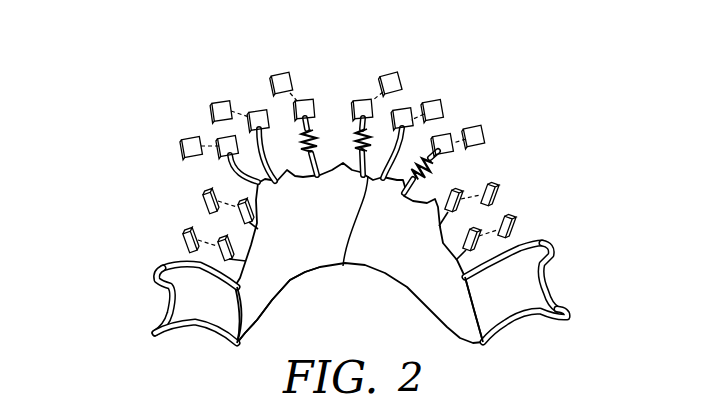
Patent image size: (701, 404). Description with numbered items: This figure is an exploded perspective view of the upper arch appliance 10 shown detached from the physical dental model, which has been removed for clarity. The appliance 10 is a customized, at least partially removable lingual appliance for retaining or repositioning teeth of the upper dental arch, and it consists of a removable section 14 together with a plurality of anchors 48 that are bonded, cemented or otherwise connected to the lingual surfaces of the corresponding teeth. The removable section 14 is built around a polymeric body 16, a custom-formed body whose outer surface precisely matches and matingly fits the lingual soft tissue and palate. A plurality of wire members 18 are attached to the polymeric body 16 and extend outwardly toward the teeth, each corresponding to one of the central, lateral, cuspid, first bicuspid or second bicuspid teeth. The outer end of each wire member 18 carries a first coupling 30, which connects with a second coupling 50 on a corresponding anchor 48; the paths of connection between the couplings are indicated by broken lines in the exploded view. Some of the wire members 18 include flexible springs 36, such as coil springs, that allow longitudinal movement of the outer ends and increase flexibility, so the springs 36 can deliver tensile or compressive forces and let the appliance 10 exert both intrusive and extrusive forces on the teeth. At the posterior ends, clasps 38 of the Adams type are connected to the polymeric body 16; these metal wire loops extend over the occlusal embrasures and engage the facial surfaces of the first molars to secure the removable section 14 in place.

The upper arch appliance 10 is at (505, 100).
The removable section 14 is at (407, 286).
The polymeric body 16 is at (286, 276).
The wire members 18 is at (343, 266).
The first coupling 30 is at (362, 98).
The flexible springs 36 is at (313, 133).
The clasps 38 is at (163, 268).
The anchors 48 is at (430, 97).
The second coupling 50 is at (391, 72).